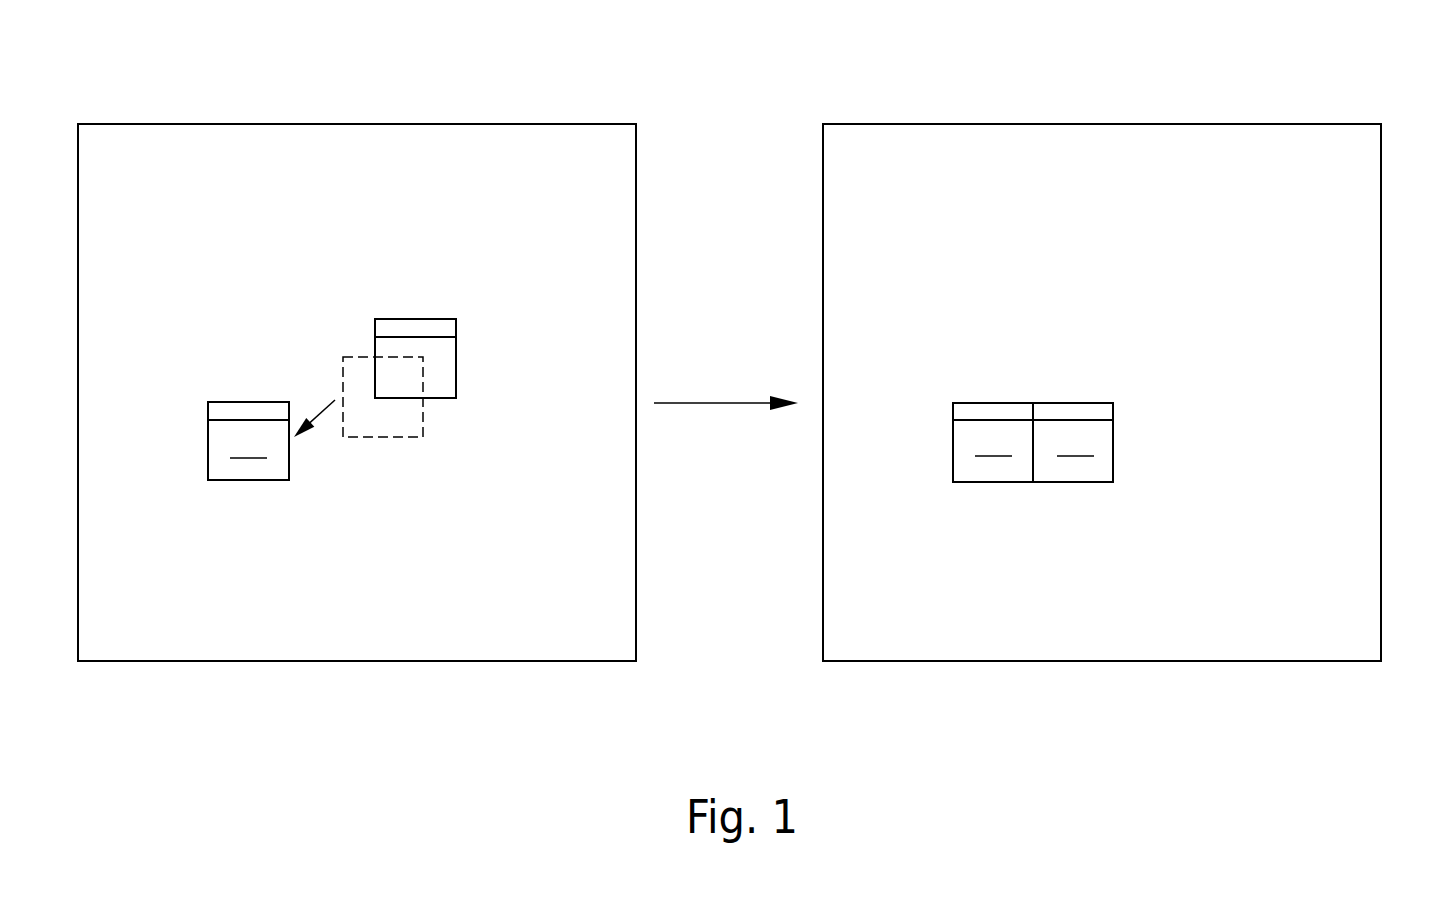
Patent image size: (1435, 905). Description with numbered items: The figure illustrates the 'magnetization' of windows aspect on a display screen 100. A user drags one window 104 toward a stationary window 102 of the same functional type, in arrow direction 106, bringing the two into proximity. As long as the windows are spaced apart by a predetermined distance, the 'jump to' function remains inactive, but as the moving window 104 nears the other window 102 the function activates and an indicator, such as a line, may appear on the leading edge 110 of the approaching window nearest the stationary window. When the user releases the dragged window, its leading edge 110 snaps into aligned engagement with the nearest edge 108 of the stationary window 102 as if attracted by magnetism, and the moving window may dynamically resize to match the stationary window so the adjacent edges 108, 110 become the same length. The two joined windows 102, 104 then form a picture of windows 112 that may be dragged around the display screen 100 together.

The display screen 100 is at (353, 123).
The window 102 is at (610, 441).
The window 104 is at (432, 319).
The arrow direction 106 is at (335, 400).
The edge 108 is at (289, 467).
The leading edge 110 is at (375, 350).
The picture of windows 112 is at (1024, 502).